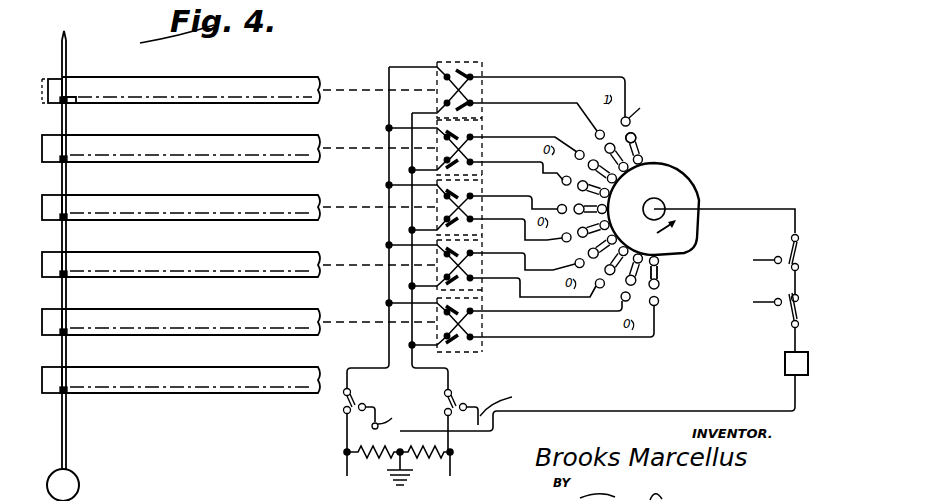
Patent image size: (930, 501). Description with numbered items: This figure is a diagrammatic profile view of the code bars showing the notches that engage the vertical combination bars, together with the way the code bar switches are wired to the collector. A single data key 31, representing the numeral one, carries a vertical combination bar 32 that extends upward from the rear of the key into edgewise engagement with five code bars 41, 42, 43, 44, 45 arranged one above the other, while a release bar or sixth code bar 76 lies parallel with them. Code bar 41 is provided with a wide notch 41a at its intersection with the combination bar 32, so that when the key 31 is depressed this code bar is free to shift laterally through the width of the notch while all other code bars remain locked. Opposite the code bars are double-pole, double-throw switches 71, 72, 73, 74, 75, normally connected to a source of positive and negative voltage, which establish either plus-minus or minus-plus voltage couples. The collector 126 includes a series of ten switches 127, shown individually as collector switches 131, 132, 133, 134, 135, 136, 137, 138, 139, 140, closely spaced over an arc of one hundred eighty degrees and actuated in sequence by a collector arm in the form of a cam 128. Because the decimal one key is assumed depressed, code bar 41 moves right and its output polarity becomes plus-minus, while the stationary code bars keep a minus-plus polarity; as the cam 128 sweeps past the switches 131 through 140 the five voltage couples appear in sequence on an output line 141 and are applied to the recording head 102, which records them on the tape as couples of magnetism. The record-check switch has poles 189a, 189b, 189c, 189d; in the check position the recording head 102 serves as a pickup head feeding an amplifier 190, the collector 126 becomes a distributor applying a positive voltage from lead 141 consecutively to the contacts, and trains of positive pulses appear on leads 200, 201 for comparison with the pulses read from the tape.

The wide notch 41a is at (76, 97).
The code bar 41 is at (253, 84).
The code bar 42 is at (256, 143).
The code bar 43 is at (257, 201).
The code bar 44 is at (269, 258).
The code bar 45 is at (274, 314).
The release bar 76 is at (278, 372).
The vertical combination bar 32 is at (68, 417).
The data key 31 is at (72, 471).
The switch 71 is at (484, 62).
The switch 72 is at (483, 123).
The switch 73 is at (483, 183).
The switch 74 is at (483, 242).
The switch 75 is at (483, 303).
The lead 200 is at (389, 343).
The lead 201 is at (421, 369).
The collector 126 is at (684, 155).
The series of switches 127 is at (676, 170).
The cam 128 is at (697, 233).
The collector switch 131 is at (630, 125).
The collector switch 132 is at (637, 151).
The collector switch 133 is at (597, 132).
The collector switch 134 is at (575, 156).
The collector switch 135 is at (562, 179).
The collector switch 136 is at (562, 240).
The collector switch 137 is at (575, 266).
The collector switch 138 is at (620, 300).
The collector switch 139 is at (650, 273).
The collector switch 140 is at (660, 300).
The output line 141 is at (712, 208).
The pole of record-check switch 189a is at (786, 308).
The pole of record-check switch 189b is at (800, 253).
The pole of record-check switch 189c is at (358, 399).
The pole of record-check switch 189d is at (456, 396).
The amplifier 190 is at (739, 305).
The recording head 102 is at (785, 366).